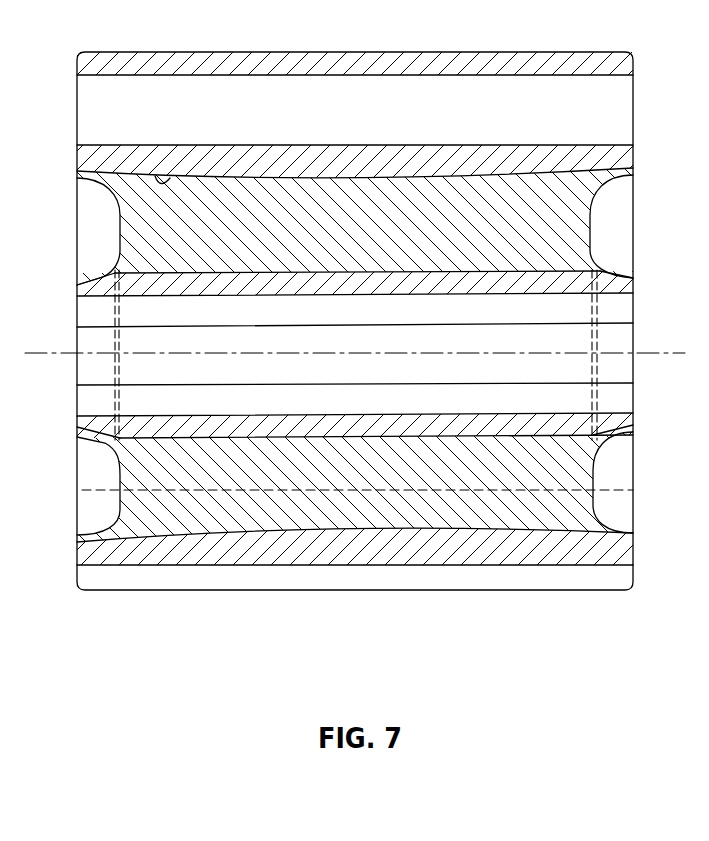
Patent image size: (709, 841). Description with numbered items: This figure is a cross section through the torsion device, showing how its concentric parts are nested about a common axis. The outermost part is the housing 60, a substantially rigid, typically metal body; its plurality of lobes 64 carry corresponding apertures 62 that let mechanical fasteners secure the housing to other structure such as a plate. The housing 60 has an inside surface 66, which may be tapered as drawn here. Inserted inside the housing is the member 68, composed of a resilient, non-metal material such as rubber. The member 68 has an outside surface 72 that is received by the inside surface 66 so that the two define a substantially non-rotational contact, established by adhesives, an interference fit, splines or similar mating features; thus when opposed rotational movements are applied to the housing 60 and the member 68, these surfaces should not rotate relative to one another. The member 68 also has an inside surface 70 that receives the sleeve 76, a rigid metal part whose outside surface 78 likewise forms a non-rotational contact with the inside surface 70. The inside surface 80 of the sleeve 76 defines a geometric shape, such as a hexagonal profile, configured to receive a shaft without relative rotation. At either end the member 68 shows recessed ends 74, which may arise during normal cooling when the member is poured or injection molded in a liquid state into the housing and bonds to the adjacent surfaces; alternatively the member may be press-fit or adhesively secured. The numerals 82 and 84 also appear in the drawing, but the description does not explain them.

The housing 60 is at (497, 51).
The apertures 62 is at (623, 97).
The lobes 64 is at (118, 590).
The inside surface 66 is at (153, 173).
The member 68 is at (507, 200).
The inside surface 70 is at (190, 274).
The outside surface 72 is at (252, 175).
The recessed ends 74 is at (592, 223).
The sleeve 76 is at (616, 292).
The outside surface 78 is at (347, 425).
The inside surface 80 is at (107, 415).
The seal cavity 82 is at (107, 275).
The axis 84 is at (675, 352).